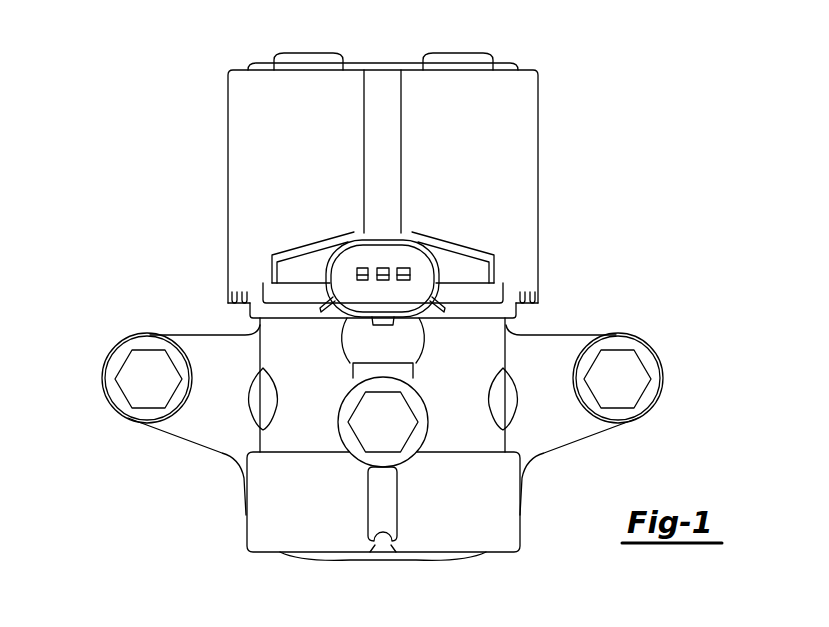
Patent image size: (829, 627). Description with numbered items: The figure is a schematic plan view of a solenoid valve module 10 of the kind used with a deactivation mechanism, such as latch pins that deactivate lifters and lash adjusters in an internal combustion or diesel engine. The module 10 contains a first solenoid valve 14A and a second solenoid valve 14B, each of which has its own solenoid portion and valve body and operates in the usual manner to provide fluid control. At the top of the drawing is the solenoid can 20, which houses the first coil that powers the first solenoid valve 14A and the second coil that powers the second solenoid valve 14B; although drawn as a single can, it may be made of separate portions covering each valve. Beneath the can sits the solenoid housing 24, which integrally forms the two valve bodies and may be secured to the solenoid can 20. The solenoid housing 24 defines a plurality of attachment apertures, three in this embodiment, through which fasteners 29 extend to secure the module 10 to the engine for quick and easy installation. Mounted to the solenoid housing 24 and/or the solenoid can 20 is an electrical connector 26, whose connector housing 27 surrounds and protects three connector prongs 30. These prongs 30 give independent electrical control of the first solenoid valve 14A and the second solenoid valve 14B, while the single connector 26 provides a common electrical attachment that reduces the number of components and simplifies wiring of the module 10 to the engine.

The solenoid valve module 10 is at (128, 111).
The first solenoid valve 14A is at (262, 50).
The second solenoid valve 14B is at (503, 50).
The solenoid can 20 is at (242, 100).
The solenoid housing 24 is at (198, 342).
The electrical connector 26 is at (412, 222).
The connector housing 27 is at (340, 258).
The fasteners 29 is at (135, 384).
The connector prongs 30 is at (403, 268).